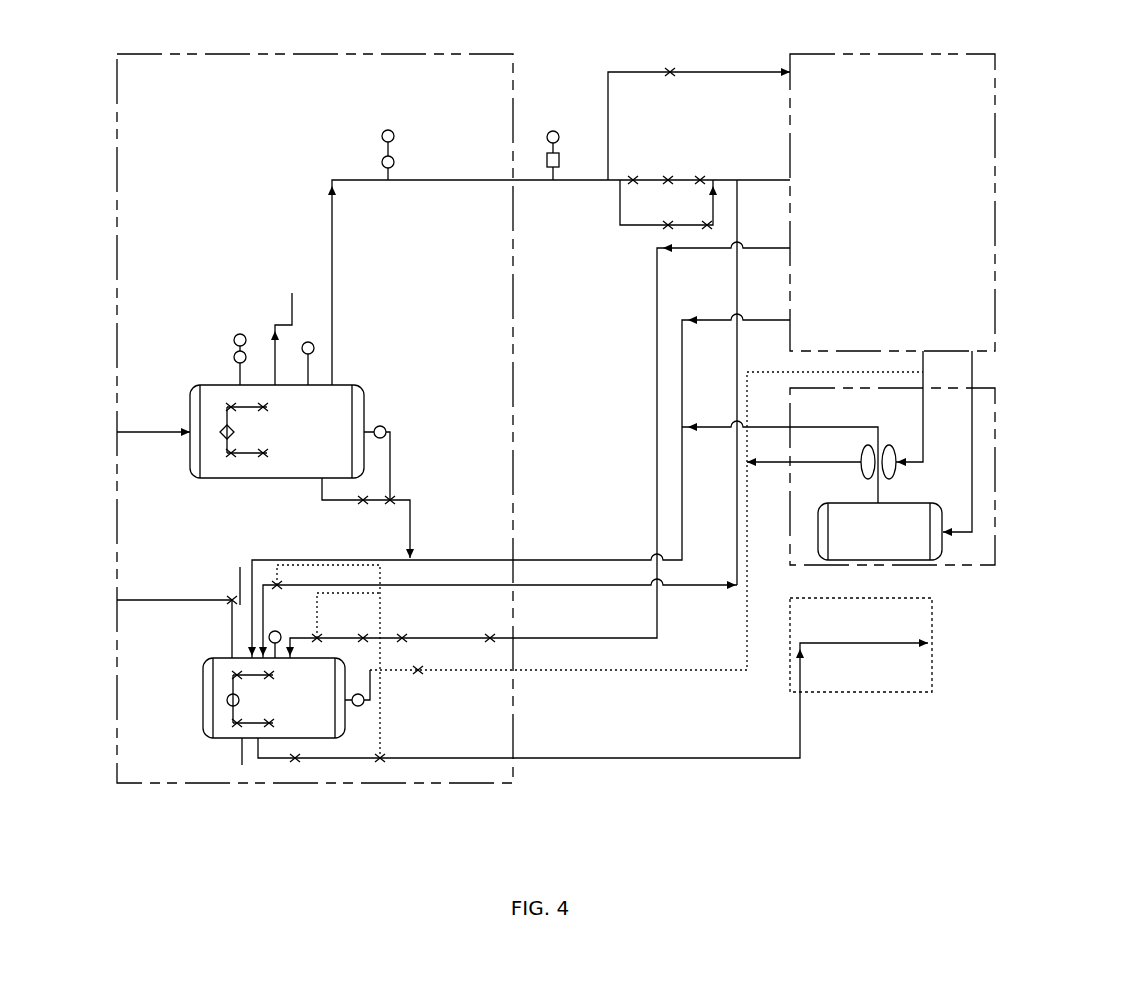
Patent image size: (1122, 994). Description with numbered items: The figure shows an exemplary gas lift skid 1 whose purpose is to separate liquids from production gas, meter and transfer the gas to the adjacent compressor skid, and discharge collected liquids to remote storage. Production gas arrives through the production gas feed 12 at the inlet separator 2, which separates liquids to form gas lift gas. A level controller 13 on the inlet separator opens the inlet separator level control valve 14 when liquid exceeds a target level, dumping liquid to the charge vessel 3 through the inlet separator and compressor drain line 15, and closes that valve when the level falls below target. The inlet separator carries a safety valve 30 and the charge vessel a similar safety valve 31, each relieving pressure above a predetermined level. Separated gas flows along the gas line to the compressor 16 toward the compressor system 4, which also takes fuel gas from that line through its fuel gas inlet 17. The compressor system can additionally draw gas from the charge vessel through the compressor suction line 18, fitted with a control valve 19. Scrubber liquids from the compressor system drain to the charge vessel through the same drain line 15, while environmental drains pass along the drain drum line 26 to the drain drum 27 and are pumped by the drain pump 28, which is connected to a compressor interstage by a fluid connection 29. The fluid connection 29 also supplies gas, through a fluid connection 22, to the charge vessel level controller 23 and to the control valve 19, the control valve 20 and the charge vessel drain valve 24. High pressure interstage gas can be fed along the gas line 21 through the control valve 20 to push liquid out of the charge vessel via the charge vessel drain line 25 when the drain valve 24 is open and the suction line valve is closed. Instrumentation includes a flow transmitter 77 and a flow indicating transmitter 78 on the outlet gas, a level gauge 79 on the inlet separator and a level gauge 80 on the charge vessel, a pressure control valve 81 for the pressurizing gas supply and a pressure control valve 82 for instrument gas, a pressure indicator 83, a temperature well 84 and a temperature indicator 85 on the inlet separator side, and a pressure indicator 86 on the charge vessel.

The gas lift skid 1 is at (117, 765).
The inlet separator 2 is at (193, 455).
The charge vessel 3 is at (215, 700).
The compressor system 4 is at (995, 250).
The production gas feed 12 is at (152, 425).
The level controller 13 is at (385, 425).
The inlet separator level control valve 14 is at (395, 497).
The inlet separator and compressor drain line 15 is at (330, 558).
The gas line to the compressor 16 is at (333, 245).
The fuel gas inlet 17 is at (735, 72).
The compressor suction line 18 is at (737, 352).
The compressor suction line control valve 19 is at (277, 582).
The gas line control valve 20 is at (316, 634).
The gas line 21 is at (657, 300).
The fluid connection 22 is at (672, 671).
The charge vessel level controller 23 is at (364, 701).
The charge vessel drain valve 24 is at (382, 762).
The charge vessel drain line 25 is at (652, 758).
The drain drum line 26 is at (975, 420).
The drain drum 27 is at (945, 552).
The drain pump 28 is at (900, 467).
The fluid connection 29 is at (925, 385).
The safety valve 30 is at (273, 323).
The safety valve 31 is at (232, 600).
The flow transmitter 77 is at (395, 134).
The flow indicating transmitter 78 is at (382, 160).
The level gauge 79 is at (252, 432).
The level gauge 80 is at (258, 700).
The pressure control valve 81 is at (404, 636).
The pressure control valve 82 is at (420, 672).
The pressure indicator 83 is at (316, 348).
The temperature well 84 is at (553, 130).
The temperature indicator 85 is at (233, 342).
The pressure indicator 86 is at (270, 636).